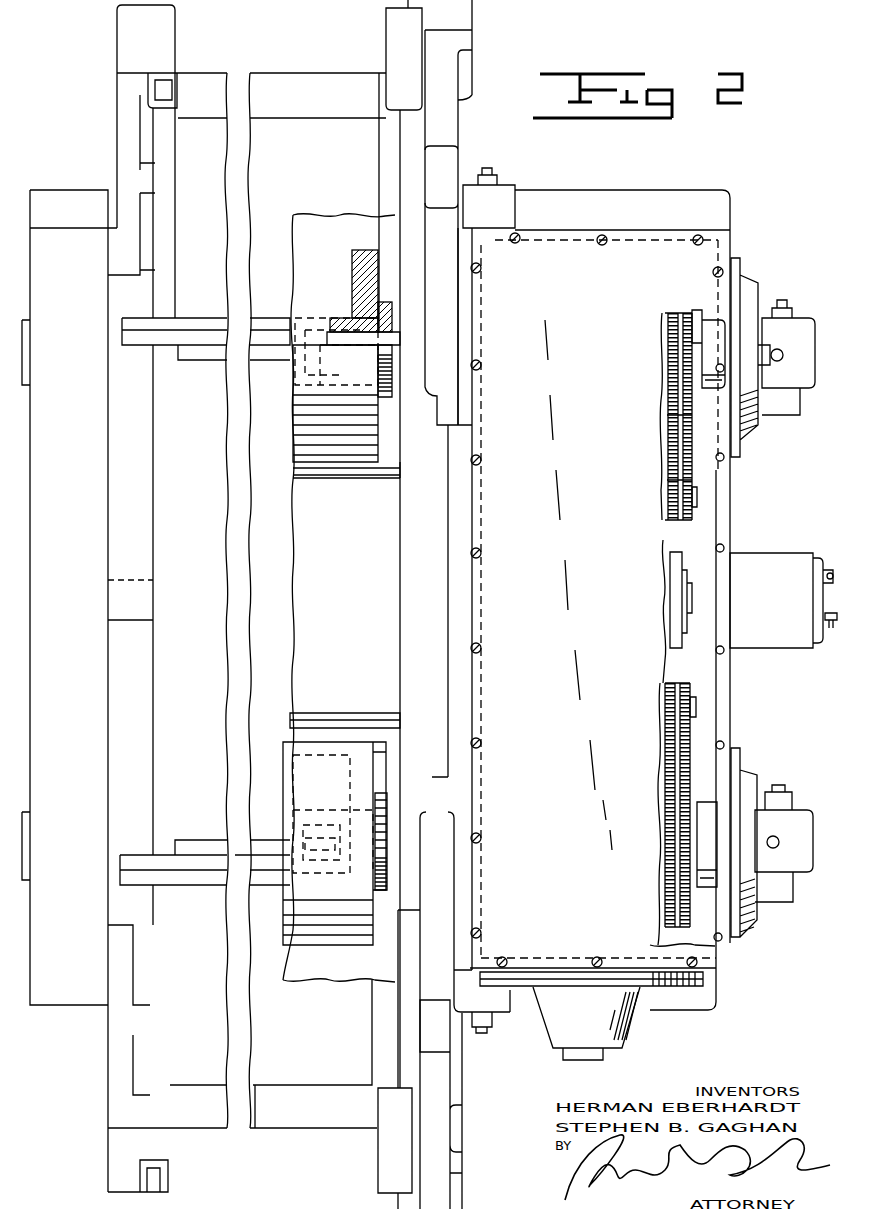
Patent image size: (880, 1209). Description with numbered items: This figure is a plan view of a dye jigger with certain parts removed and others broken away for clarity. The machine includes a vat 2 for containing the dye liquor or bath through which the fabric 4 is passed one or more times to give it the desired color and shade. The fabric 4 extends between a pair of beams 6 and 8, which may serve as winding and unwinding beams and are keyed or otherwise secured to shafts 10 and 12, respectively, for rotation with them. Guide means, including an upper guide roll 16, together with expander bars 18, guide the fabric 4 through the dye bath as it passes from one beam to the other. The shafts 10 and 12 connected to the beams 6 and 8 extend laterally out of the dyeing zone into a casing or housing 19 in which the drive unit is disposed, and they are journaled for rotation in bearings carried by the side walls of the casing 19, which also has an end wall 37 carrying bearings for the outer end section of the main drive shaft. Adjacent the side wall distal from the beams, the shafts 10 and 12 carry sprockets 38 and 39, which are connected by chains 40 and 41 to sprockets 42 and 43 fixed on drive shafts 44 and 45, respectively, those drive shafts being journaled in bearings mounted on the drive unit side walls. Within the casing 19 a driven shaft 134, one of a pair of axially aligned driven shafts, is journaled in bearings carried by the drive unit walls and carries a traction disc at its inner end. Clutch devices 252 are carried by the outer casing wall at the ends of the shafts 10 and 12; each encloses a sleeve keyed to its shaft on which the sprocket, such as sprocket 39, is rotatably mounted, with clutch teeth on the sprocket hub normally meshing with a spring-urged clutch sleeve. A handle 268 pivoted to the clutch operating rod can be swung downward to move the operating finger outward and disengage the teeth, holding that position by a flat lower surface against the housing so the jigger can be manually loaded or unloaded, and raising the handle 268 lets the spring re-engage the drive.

The vat 2 is at (310, 982).
The fabric 4 is at (366, 624).
The beam 6 is at (378, 835).
The beam 8 is at (387, 355).
The shaft 10 is at (393, 847).
The shaft 12 is at (397, 343).
The upper guide roll 16 is at (342, 462).
The expander bars 18 is at (392, 476).
The casing 19 is at (715, 247).
The end wall 37 is at (653, 985).
The sprocket 38 is at (665, 848).
The sprocket 39 is at (677, 350).
The chain 40 is at (673, 750).
The chain 41 is at (670, 442).
The sprocket 42 is at (677, 673).
The sprocket 43 is at (663, 490).
The drive shaft 44 is at (696, 712).
The drive shaft 45 is at (693, 505).
The driven shaft 134 is at (692, 602).
The clutch device 252 is at (762, 273).
The handle 268 is at (778, 350).